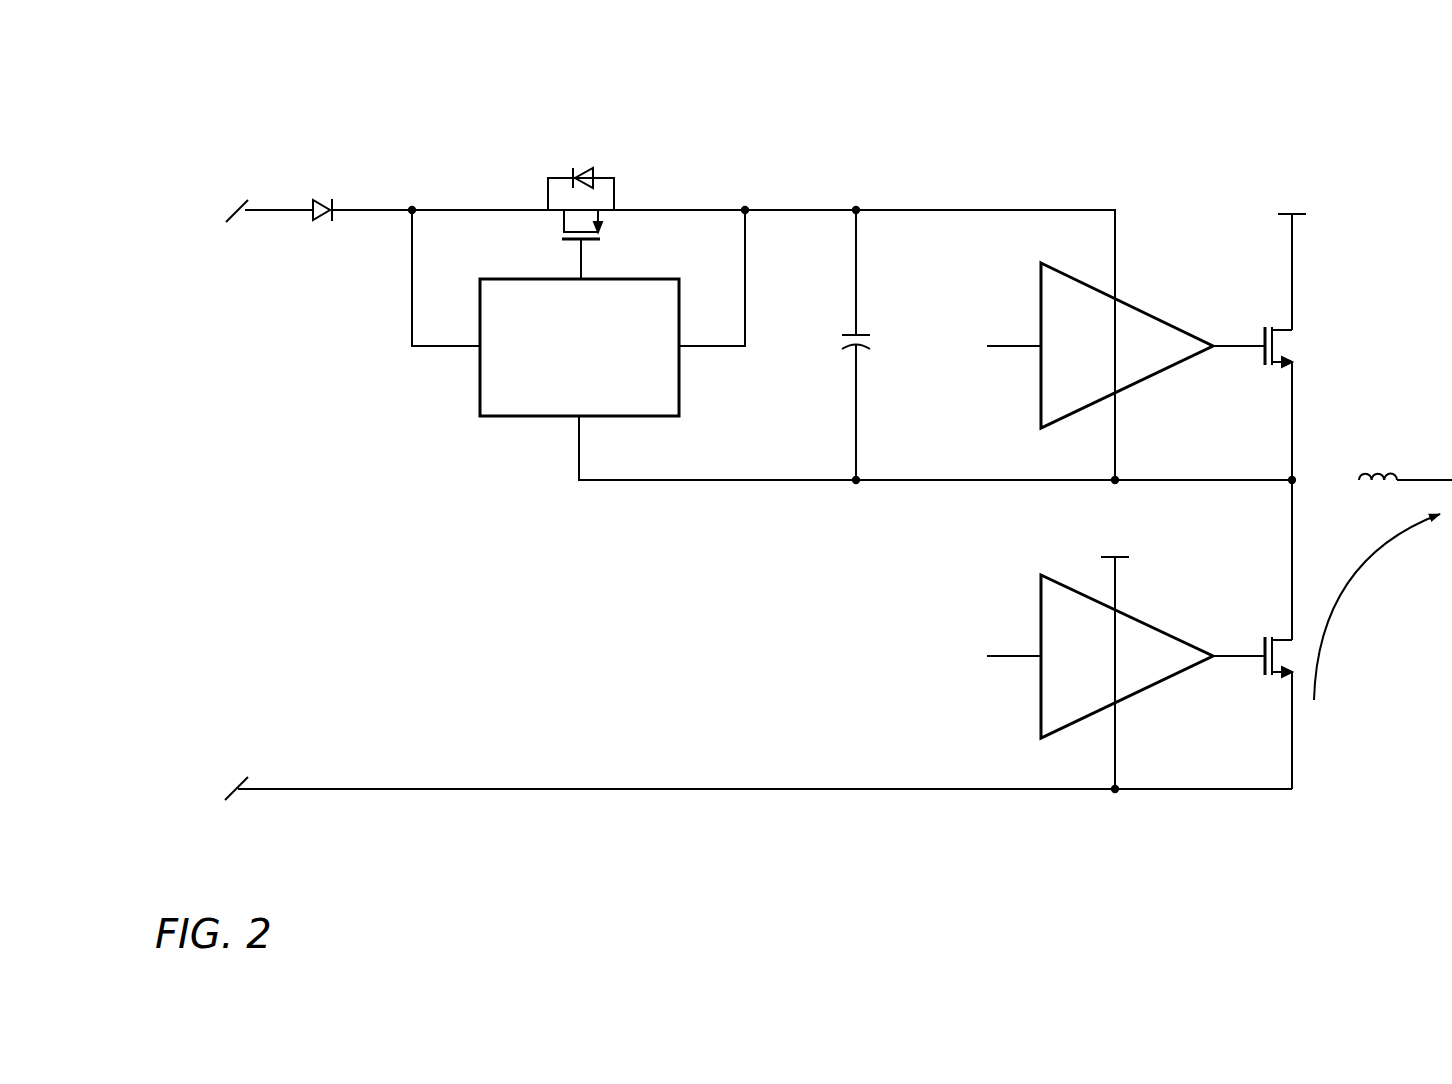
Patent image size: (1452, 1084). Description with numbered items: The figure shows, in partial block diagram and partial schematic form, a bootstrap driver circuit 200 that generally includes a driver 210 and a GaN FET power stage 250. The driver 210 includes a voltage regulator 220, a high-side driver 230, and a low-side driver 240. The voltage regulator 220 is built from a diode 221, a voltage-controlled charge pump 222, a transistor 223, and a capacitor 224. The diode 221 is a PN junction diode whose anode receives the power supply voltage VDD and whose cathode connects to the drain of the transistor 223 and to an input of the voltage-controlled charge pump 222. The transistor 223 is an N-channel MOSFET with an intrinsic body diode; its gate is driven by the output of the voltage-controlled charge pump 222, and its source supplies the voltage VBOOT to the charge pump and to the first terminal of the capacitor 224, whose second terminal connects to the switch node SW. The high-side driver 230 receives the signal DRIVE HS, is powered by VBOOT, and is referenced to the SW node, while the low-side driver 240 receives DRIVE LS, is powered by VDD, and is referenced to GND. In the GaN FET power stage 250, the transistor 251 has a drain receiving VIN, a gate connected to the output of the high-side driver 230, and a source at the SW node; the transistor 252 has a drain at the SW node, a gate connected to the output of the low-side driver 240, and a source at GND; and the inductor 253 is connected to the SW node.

The bootstrap driver circuit 200 is at (213, 88).
The driver 210 is at (260, 358).
The voltage regulator 220 is at (673, 182).
The diode 221 is at (325, 221).
The voltage-controlled charge pump 222 is at (479, 381).
The transistor 223 is at (560, 227).
The capacitor 224 is at (848, 335).
The high-side driver 230 is at (1142, 317).
The low-side driver 240 is at (1143, 620).
The GaN FET power stage 250 is at (1236, 216).
The transistor 251 is at (1275, 328).
The transistor 252 is at (1275, 638).
The inductor 253 is at (1385, 470).